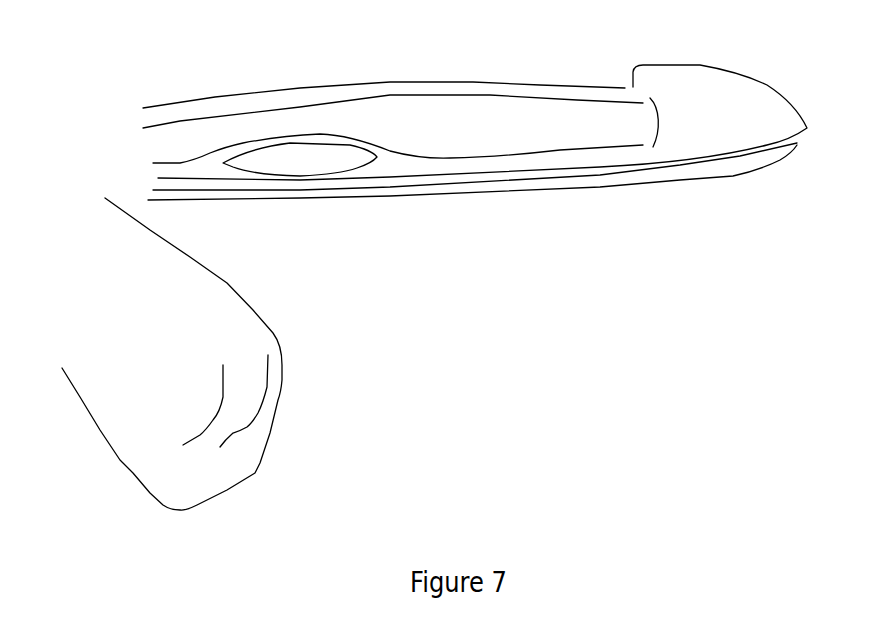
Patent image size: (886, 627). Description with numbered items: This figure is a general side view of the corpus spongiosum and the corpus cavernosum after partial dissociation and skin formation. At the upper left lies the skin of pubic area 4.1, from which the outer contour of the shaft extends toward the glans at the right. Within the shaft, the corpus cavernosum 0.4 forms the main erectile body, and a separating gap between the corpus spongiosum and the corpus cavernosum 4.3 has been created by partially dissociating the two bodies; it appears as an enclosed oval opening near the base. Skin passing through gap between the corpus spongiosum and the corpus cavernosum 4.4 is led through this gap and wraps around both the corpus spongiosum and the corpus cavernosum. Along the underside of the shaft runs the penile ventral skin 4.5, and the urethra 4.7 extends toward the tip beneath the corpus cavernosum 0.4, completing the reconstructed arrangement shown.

The skin of pubic area 4.1 is at (100, 47).
The separating gap between the corpus spongiosum and the corpus cavernosum 4.3 is at (295, 160).
The skin passing through gap between the corpus spongiosum and the corpus cavernosum 4.4 is at (353, 172).
The penile ventral skin 4.5 is at (463, 195).
The corpus cavernosum 0.4 is at (625, 122).
The urethra 4.7 is at (708, 162).